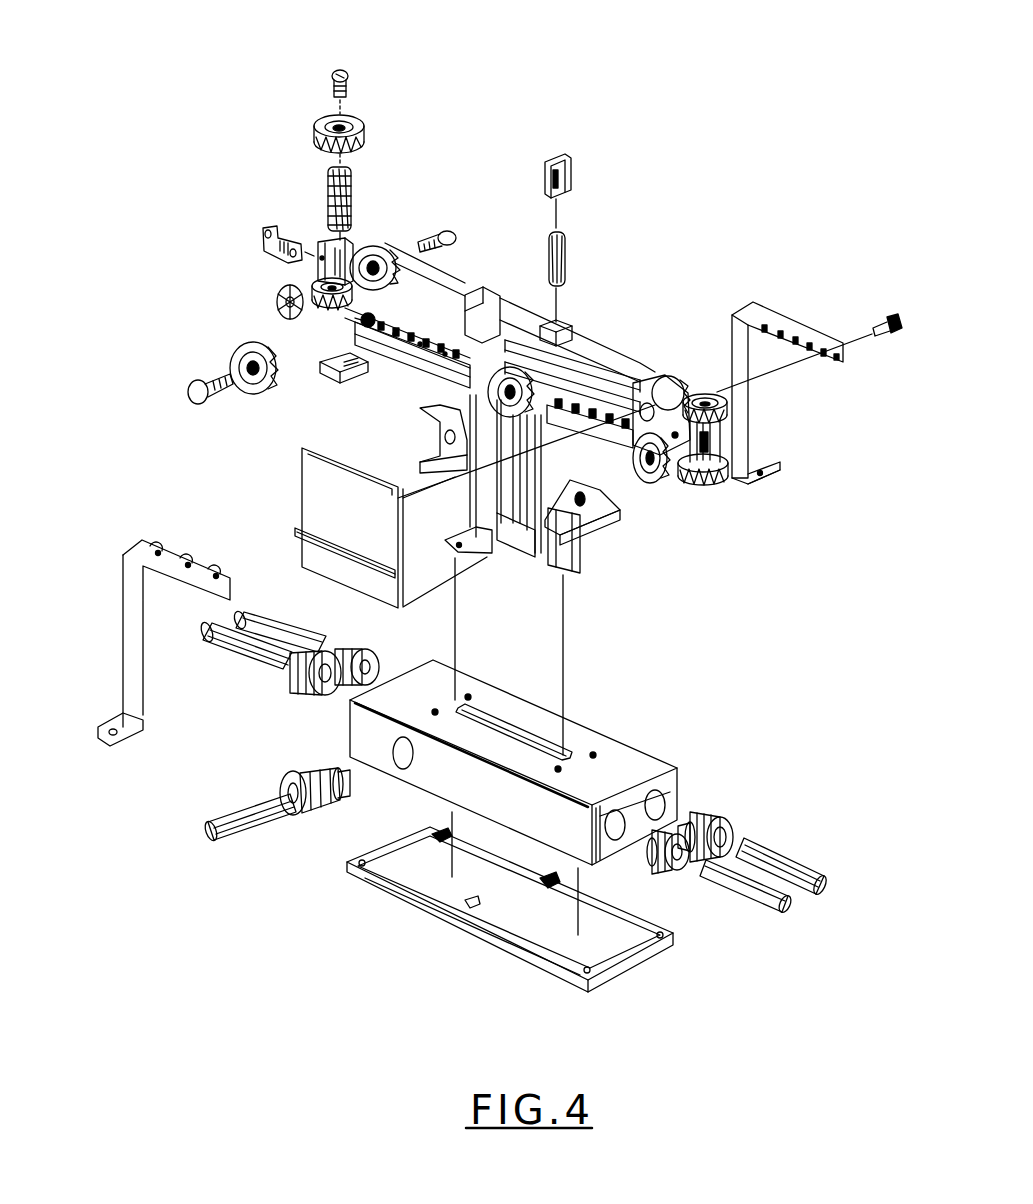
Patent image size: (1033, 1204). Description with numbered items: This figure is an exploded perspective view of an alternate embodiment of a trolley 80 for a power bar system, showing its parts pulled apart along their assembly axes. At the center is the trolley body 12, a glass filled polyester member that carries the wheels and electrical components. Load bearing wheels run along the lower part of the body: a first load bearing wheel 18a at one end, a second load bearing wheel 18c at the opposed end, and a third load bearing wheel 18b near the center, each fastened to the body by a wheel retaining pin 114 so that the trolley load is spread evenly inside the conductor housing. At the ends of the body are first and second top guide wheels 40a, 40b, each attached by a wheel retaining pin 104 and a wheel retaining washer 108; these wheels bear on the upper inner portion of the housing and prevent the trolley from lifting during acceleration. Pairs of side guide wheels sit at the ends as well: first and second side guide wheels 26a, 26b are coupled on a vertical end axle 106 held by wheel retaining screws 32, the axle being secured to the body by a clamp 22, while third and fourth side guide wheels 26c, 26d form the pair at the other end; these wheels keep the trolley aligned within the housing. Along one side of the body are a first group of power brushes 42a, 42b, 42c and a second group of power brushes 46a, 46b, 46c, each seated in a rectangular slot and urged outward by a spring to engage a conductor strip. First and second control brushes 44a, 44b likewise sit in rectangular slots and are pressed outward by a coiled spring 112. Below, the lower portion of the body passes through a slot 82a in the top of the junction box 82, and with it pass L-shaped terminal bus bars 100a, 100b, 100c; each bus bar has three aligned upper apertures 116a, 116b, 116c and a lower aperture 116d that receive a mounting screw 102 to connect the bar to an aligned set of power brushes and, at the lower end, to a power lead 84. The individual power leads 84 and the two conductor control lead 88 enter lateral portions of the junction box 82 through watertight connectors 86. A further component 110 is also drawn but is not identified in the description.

The trolley body 12 is at (314, 239).
The first load bearing wheel 18a is at (250, 390).
The third load bearing wheel 18b is at (503, 398).
The second load bearing wheel 18c is at (653, 484).
The clamp 22 is at (264, 228).
The first side guide wheel 26a is at (358, 118).
The second side guide wheel 26b is at (352, 322).
The third side guide wheel 26c is at (730, 411).
The fourth side guide wheel 26d is at (711, 486).
The wheel retaining screw 32 is at (340, 68).
The first top guide wheel 40a is at (374, 247).
The second top guide wheel 40b is at (669, 387).
The power brush 42a is at (332, 382).
The power brush 42b is at (378, 354).
The power brush 42c is at (467, 388).
The first control brush 44a is at (487, 297).
The second control brush 44b is at (569, 158).
The power brush 46a is at (557, 367).
The power brush 46b is at (589, 397).
The power brush 46c is at (621, 406).
The trolley 80 is at (133, 784).
The junction box 82 is at (624, 757).
The slot 82a is at (484, 716).
The power lead 84 is at (797, 865).
The watertight connector 86 is at (734, 818).
The control lead 88 is at (238, 810).
The terminal bus bar 100a is at (483, 505).
The terminal bus bar 100b is at (138, 542).
The terminal bus bar 100c is at (742, 307).
The mounting screw 102 is at (891, 333).
The wheel retaining pin 104 is at (448, 230).
The vertical end axle 106 is at (351, 182).
The wheel retaining washer 108 is at (279, 293).
The plate 110 is at (320, 505).
The coiled spring 112 is at (568, 246).
The wheel retaining pin 114 is at (207, 377).
The upper aperture 116a is at (773, 322).
The upper aperture 116b is at (798, 339).
The upper aperture 116c is at (829, 345).
The lower aperture 116d is at (768, 465).